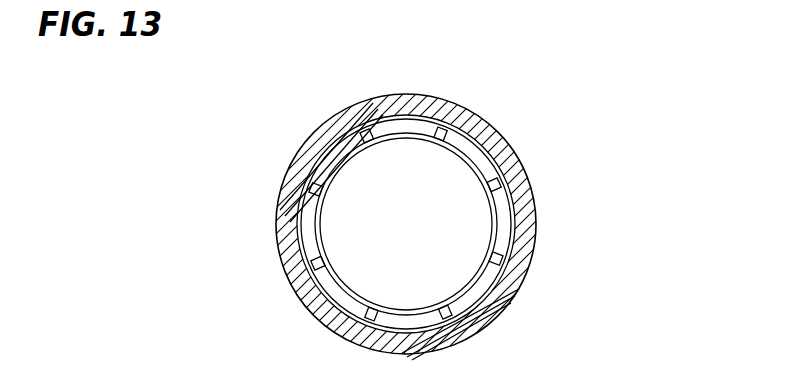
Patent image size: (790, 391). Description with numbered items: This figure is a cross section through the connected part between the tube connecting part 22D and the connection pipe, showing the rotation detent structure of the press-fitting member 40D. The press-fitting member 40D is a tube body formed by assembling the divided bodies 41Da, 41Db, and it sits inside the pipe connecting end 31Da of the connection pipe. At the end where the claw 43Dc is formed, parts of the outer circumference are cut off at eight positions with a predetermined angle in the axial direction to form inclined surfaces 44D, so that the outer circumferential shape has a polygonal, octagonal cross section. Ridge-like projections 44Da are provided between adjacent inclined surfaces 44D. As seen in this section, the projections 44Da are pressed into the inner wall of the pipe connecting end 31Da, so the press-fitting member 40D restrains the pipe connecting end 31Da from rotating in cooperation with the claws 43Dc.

The tube connecting part 22D is at (415, 132).
The pipe connecting end 31Da is at (470, 112).
The claw 43Dc is at (536, 190).
The divided body 41Da is at (538, 211).
The divided body 41Db is at (537, 238).
The press-fitting member 40D is at (617, 200).
The inclined surface 44D is at (512, 262).
The projection 44Da is at (504, 302).